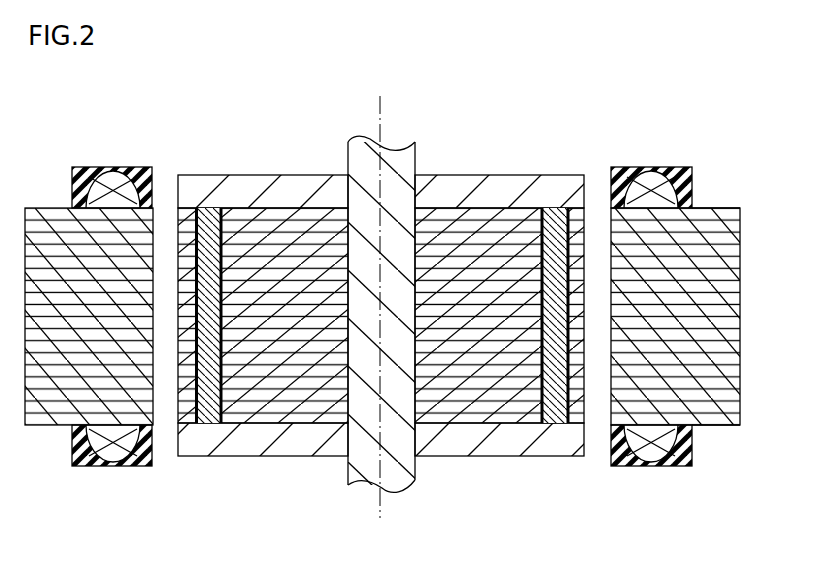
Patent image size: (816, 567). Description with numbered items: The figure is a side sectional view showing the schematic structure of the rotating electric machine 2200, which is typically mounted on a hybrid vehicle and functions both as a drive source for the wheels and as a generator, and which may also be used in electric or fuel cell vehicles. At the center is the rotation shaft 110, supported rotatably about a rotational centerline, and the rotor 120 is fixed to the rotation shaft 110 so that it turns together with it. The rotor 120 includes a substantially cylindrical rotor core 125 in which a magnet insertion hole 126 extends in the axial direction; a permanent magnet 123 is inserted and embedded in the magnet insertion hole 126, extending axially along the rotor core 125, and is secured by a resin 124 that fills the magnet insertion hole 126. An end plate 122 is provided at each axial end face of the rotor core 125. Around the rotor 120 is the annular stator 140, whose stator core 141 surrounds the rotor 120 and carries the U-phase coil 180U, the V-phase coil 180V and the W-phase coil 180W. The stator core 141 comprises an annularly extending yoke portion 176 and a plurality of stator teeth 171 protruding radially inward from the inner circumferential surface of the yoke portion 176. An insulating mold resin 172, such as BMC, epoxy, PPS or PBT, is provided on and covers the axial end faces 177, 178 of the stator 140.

The rotating electric machine 2200 is at (482, 110).
The rotation shaft 110 is at (418, 475).
The rotor 120 is at (374, 330).
The end plate 122 is at (272, 190).
The permanent magnet 123 is at (383, 325).
The resin 124 is at (368, 325).
The rotor core 125 is at (252, 417).
The magnet insertion hole 126 is at (210, 213).
The stator 140 is at (699, 335).
The stator core 141 is at (717, 382).
The stator teeth 171 is at (89, 361).
The mold resin 172 is at (402, 330).
The yoke portion 176 is at (43, 320).
The axial end face 177 is at (722, 208).
The axial end face 178 is at (712, 427).
The U-phase coil 180U is at (659, 481).
The V-phase coil 180V is at (659, 481).
The W-phase coil 180W is at (655, 452).